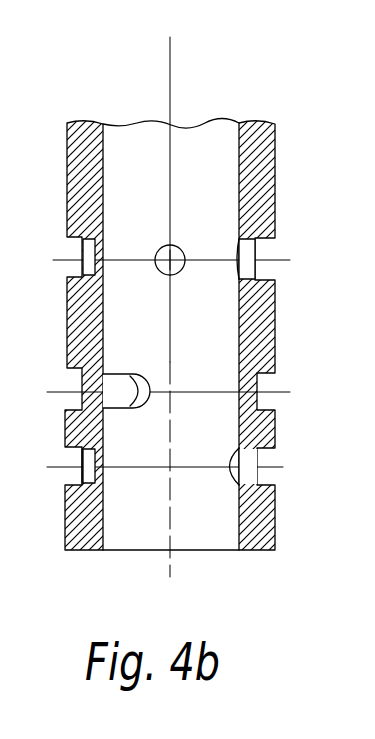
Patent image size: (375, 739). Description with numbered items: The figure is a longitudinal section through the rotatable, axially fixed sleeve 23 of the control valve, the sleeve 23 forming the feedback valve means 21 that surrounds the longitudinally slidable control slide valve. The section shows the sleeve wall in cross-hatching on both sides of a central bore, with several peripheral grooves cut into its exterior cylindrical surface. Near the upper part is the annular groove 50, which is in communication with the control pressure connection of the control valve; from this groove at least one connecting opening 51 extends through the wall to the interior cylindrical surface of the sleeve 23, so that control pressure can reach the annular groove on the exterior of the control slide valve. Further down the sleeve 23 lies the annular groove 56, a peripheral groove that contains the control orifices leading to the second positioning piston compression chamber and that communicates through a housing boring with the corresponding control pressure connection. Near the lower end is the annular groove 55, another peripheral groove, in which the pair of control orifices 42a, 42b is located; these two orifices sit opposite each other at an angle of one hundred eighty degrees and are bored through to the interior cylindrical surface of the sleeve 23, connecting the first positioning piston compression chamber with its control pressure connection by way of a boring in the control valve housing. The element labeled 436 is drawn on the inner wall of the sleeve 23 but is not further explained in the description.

The feedback valve means 21 is at (83, 127).
The sleeve 23 is at (83, 127).
The annular groove 50 is at (75, 240).
The connecting opening 51 is at (103, 252).
The locking projection 436 is at (135, 374).
The annular groove 56 is at (70, 372).
The annular groove 55 is at (73, 473).
The control orifice 42b is at (106, 478).
The control orifice 42a is at (222, 485).